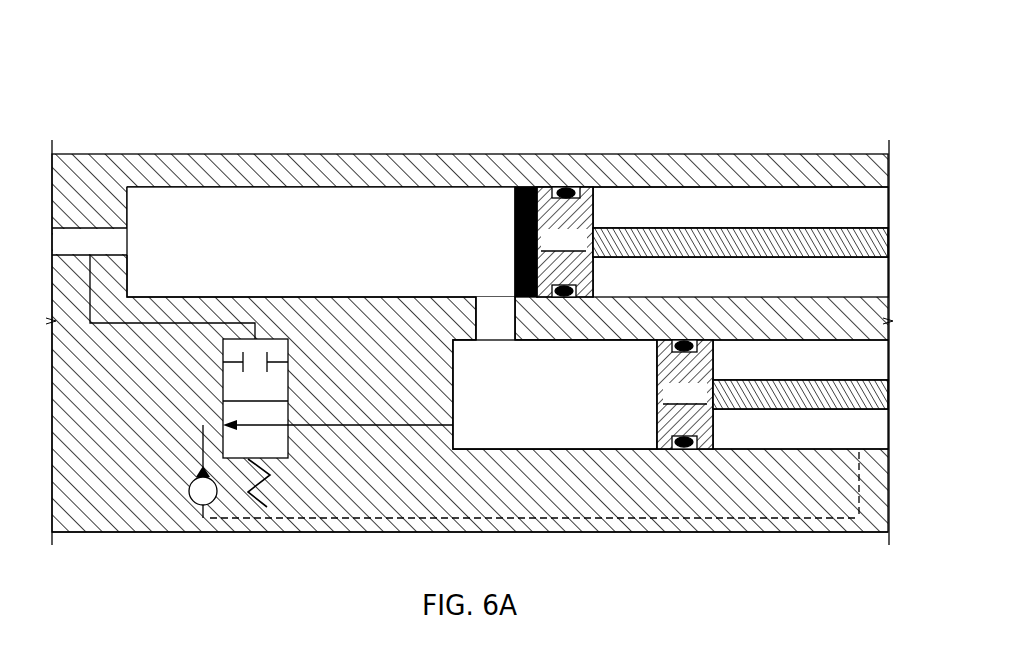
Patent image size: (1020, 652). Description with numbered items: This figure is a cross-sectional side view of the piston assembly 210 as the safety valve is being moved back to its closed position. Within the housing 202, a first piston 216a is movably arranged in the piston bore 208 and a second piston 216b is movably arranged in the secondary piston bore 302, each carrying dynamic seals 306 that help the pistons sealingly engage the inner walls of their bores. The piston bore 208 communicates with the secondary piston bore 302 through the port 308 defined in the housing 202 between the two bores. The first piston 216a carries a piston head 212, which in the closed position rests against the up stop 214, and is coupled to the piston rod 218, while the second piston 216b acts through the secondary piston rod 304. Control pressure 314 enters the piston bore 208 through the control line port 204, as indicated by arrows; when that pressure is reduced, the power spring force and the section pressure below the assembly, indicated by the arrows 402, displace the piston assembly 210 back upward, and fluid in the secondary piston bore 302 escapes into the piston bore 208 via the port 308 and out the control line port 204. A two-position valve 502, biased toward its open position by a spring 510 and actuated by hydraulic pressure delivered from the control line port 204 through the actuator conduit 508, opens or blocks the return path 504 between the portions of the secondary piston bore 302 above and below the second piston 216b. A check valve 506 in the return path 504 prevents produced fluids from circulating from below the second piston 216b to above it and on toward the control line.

The housing 202 is at (670, 155).
The control line port 204 is at (84, 230).
The piston bore 208 is at (362, 190).
The piston assembly 210 is at (123, 75).
The piston head 212 is at (512, 200).
The up stop 214 is at (127, 215).
The first piston 216a is at (565, 242).
The second piston 216b is at (685, 394).
The piston rod 218 is at (790, 234).
The secondary piston bore 302 is at (786, 458).
The secondary piston rod 304 is at (801, 403).
The dynamic seals 306 is at (567, 188).
The port 308 is at (483, 318).
The control pressure 314 is at (492, 243).
The opposing forces 402 is at (617, 277).
The two-position valve 502 is at (288, 356).
The return path 504 is at (360, 516).
The check valve 506 is at (198, 470).
The actuator conduit 508 is at (112, 323).
The spring 510 is at (270, 487).